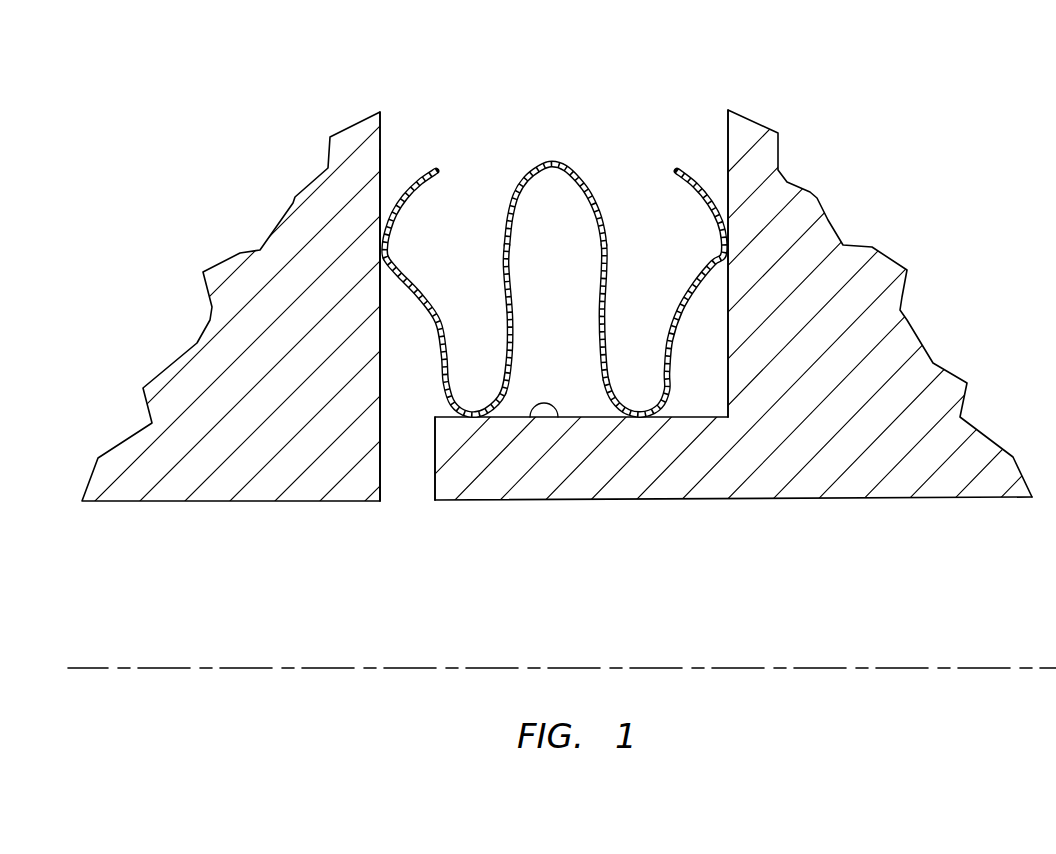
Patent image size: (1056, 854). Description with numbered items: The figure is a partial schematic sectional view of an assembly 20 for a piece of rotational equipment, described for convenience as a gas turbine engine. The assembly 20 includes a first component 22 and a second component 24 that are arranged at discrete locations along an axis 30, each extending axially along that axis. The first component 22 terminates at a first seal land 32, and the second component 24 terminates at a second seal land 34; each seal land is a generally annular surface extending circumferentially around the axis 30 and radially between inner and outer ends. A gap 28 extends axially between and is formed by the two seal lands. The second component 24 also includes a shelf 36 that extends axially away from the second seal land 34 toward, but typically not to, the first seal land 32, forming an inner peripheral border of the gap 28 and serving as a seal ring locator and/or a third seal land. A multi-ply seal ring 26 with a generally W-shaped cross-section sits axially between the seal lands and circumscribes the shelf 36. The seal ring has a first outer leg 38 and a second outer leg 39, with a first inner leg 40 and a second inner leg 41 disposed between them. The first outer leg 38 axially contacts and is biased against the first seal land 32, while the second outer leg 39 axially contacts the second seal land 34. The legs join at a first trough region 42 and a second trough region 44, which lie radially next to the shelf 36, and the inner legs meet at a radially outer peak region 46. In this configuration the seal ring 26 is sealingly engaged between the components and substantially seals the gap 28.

The assembly 20 is at (528, 294).
The first component 22 is at (290, 128).
The second component 24 is at (809, 123).
The multi-ply seal ring 26 is at (555, 293).
The gap 28 is at (412, 405).
The axis 30 is at (92, 668).
The first seal land 32 is at (382, 133).
The second seal land 34 is at (728, 141).
The shelf 36 is at (534, 418).
The first outer leg 38 is at (387, 244).
The second outer leg 39 is at (721, 256).
The first inner leg 40 is at (505, 287).
The second inner leg 41 is at (607, 288).
The first trough region 42 is at (483, 420).
The second trough region 44 is at (637, 417).
The peak region 46 is at (552, 161).